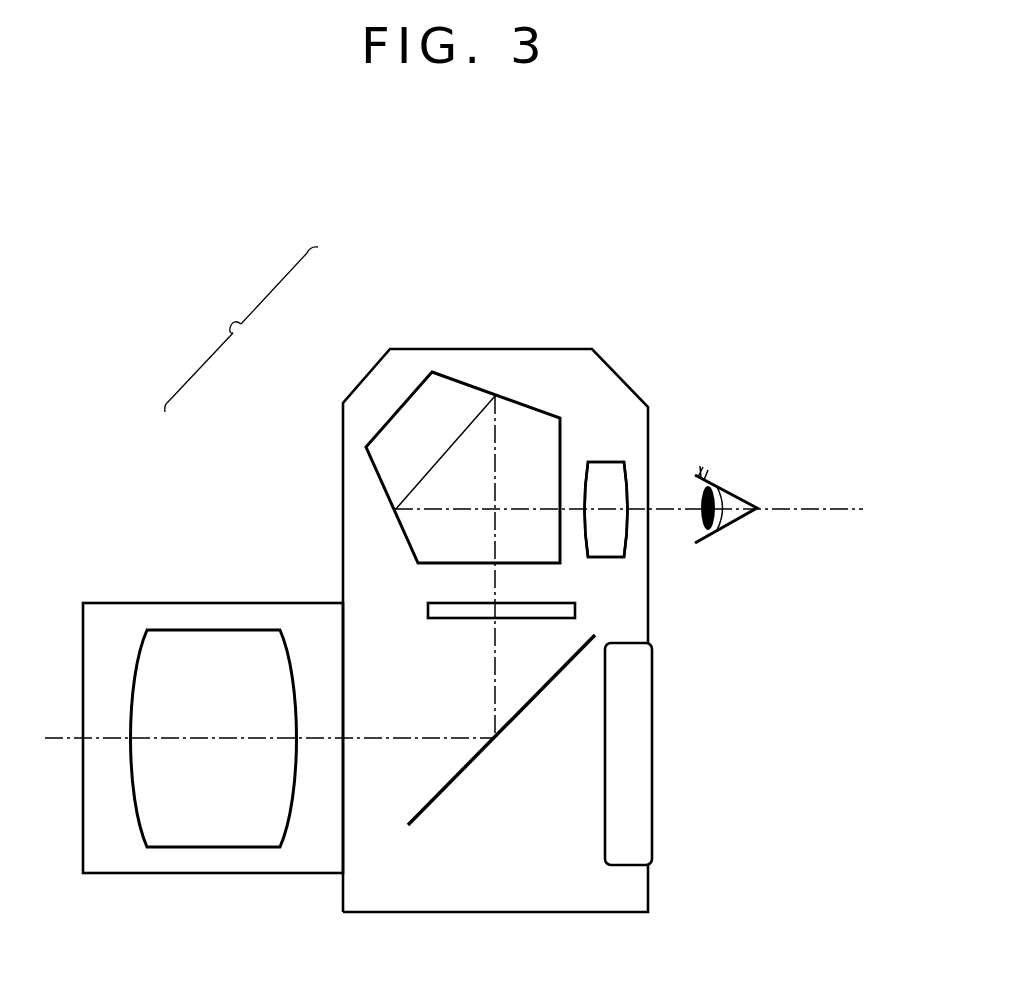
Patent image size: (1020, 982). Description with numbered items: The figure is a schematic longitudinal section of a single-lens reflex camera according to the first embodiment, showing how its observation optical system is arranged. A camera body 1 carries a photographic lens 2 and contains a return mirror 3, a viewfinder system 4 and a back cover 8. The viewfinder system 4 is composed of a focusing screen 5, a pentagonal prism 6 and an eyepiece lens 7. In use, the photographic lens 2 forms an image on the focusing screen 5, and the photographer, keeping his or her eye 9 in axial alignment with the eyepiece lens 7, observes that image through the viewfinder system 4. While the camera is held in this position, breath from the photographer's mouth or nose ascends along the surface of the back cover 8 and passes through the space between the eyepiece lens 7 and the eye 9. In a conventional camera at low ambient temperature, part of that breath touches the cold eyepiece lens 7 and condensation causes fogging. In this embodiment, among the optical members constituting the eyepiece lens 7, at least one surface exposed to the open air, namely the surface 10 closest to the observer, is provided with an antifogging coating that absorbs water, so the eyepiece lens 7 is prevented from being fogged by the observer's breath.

The camera body 1 is at (625, 400).
The photographic lens 2 is at (130, 627).
The return mirror 3 is at (420, 817).
The viewfinder system 4 is at (241, 329).
The focusing screen 5 is at (432, 607).
The pentagonal prism 6 is at (407, 432).
The eyepiece lens 7 is at (597, 473).
The back cover 8 is at (636, 840).
The eye 9 is at (718, 492).
The surface 10 is at (625, 473).